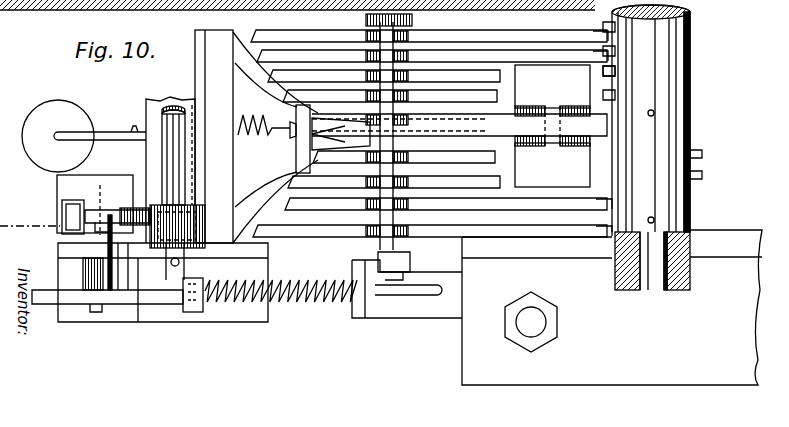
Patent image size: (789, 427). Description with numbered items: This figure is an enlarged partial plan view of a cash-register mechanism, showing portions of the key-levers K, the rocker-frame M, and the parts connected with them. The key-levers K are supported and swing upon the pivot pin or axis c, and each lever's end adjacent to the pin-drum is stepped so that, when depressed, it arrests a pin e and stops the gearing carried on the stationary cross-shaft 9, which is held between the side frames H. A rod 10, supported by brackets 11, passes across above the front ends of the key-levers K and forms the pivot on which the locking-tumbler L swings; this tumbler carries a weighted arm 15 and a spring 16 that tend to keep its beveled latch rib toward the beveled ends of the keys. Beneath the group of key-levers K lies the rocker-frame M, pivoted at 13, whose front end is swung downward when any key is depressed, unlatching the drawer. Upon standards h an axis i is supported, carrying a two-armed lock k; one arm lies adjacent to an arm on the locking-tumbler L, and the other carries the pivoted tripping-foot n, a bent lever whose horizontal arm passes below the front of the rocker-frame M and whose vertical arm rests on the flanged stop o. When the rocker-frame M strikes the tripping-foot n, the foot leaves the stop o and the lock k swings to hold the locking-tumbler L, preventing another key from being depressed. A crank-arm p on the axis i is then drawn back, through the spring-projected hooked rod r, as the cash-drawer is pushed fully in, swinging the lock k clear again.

The stationary cross-shaft 9 is at (655, 118).
The rod 10 is at (171, 112).
The brackets 11 is at (200, 246).
The pivot 13 is at (552, 108).
The weighted arm 15 is at (84, 136).
The spring 16 is at (242, 115).
The locking-tumbler L is at (148, 115).
The rocker-frame M is at (214, 136).
The key-levers K is at (431, 132).
The side frames H is at (612, 307).
The pin e is at (701, 164).
The flanged stop o is at (62, 212).
The axis i is at (120, 260).
The tripping-foot n is at (125, 210).
The standards h is at (70, 254).
The crank-arm p is at (92, 275).
The lock k is at (130, 262).
The hooked rod r is at (82, 330).
The pivot pin or axis c is at (392, 280).